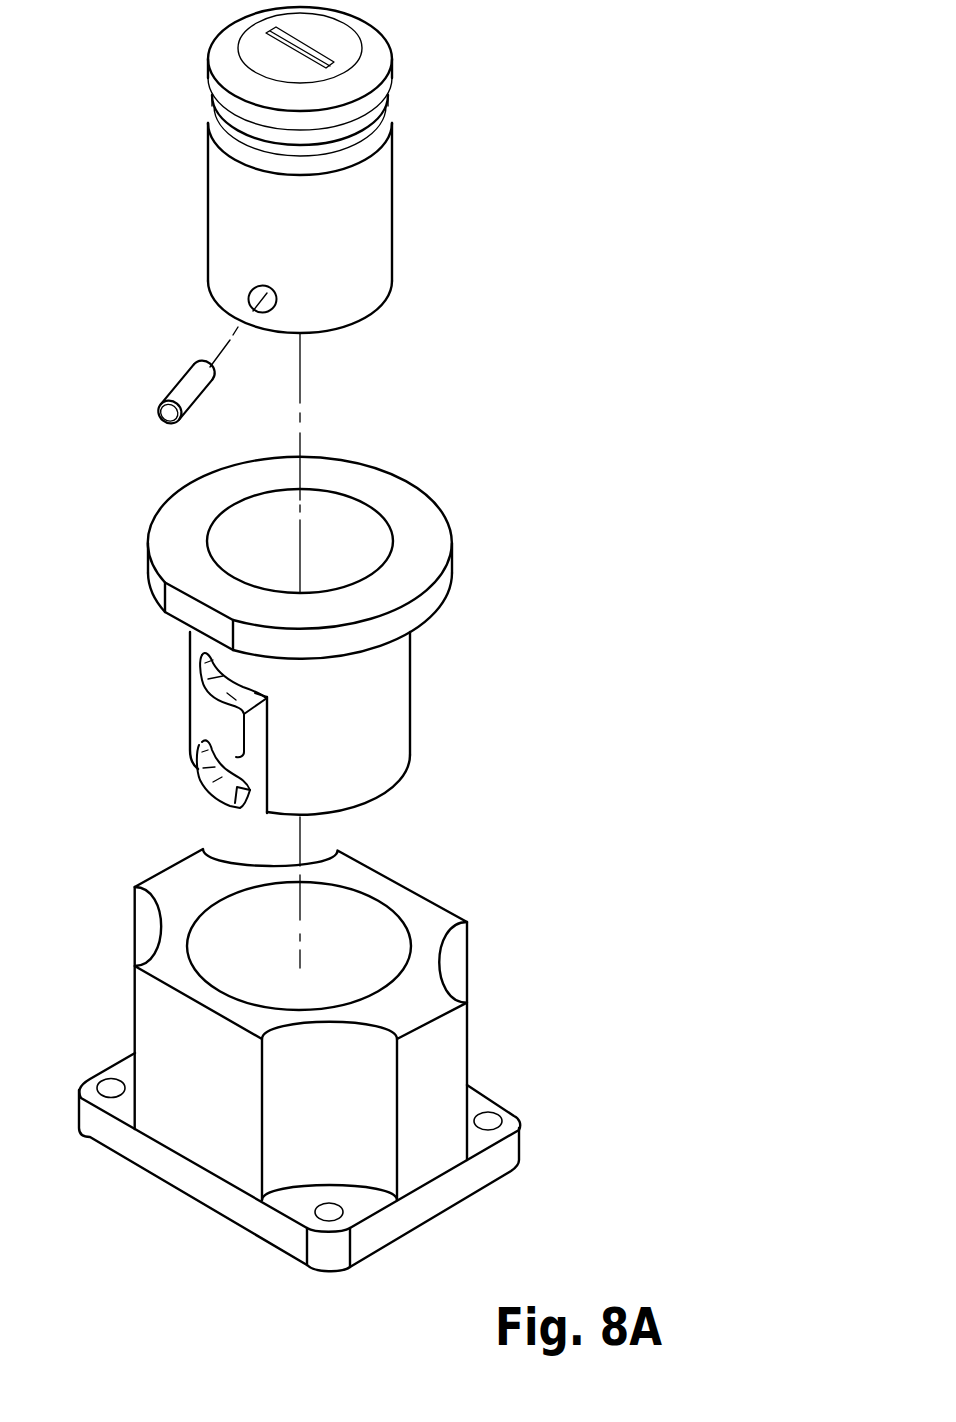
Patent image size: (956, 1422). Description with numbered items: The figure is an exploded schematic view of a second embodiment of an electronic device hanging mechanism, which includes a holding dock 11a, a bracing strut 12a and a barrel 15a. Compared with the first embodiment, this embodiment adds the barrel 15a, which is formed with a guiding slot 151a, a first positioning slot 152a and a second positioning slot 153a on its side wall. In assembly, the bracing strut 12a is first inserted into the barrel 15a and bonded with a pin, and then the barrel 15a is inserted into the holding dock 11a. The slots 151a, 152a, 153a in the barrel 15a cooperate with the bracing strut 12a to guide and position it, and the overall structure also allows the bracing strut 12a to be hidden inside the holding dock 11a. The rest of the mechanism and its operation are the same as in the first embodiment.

The holding dock 11a is at (508, 1007).
The bracing strut 12a is at (183, 185).
The barrel 15a is at (346, 636).
The guiding slot 151a is at (255, 735).
The first positioning slot 152a is at (203, 677).
The second positioning slot 153a is at (203, 769).